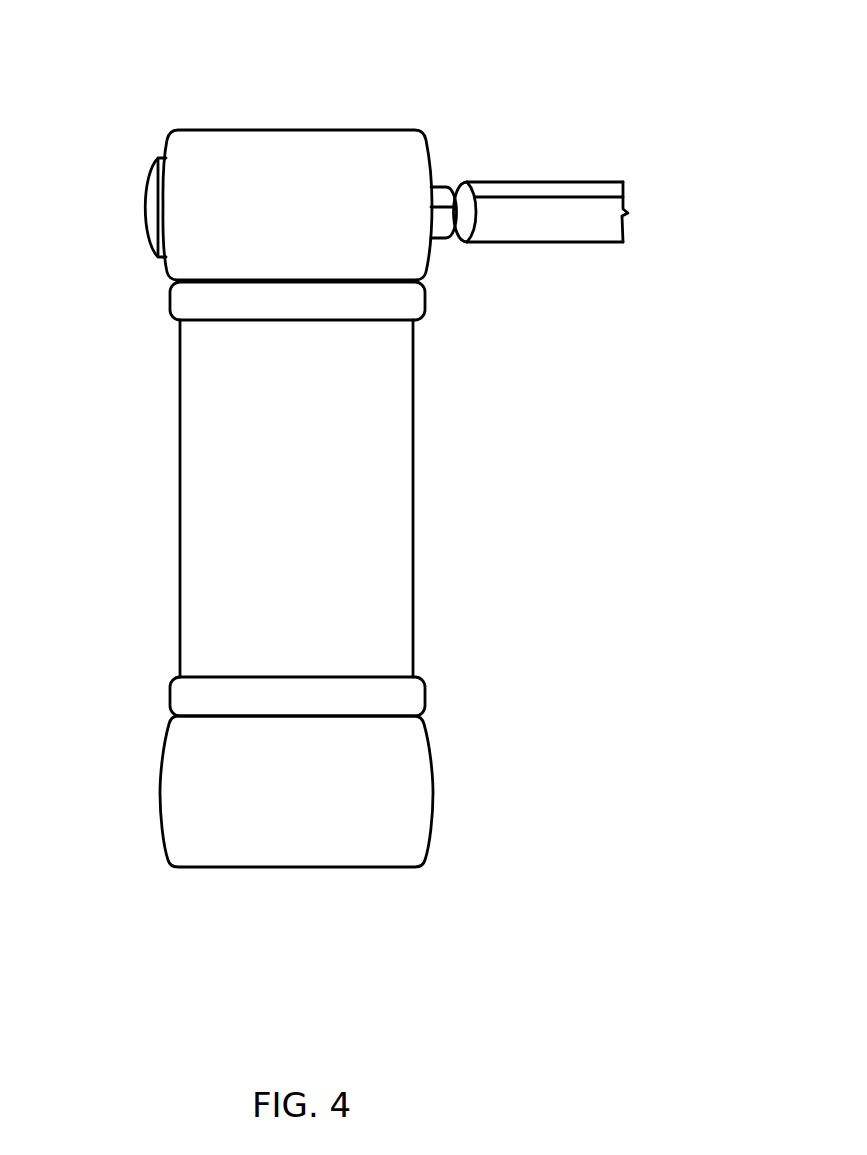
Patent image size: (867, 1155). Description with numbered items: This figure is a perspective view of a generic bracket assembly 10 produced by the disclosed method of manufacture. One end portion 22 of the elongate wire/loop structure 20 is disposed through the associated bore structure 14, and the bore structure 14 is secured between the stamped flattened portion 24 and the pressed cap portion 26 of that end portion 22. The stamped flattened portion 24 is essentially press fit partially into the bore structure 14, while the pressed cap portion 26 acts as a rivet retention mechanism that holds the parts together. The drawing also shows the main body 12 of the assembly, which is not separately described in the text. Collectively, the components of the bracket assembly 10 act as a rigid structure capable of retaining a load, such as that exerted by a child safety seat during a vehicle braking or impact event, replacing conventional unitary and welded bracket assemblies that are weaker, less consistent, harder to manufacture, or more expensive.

The bracket assembly 10 is at (437, 66).
The housing body 12 is at (405, 503).
The bore structure 14 is at (263, 153).
The elongate wire/loop structure 20 is at (548, 190).
The end portion 22 is at (439, 189).
The stamped flattened portion 24 is at (455, 240).
The pressed cap portion 26 is at (149, 212).